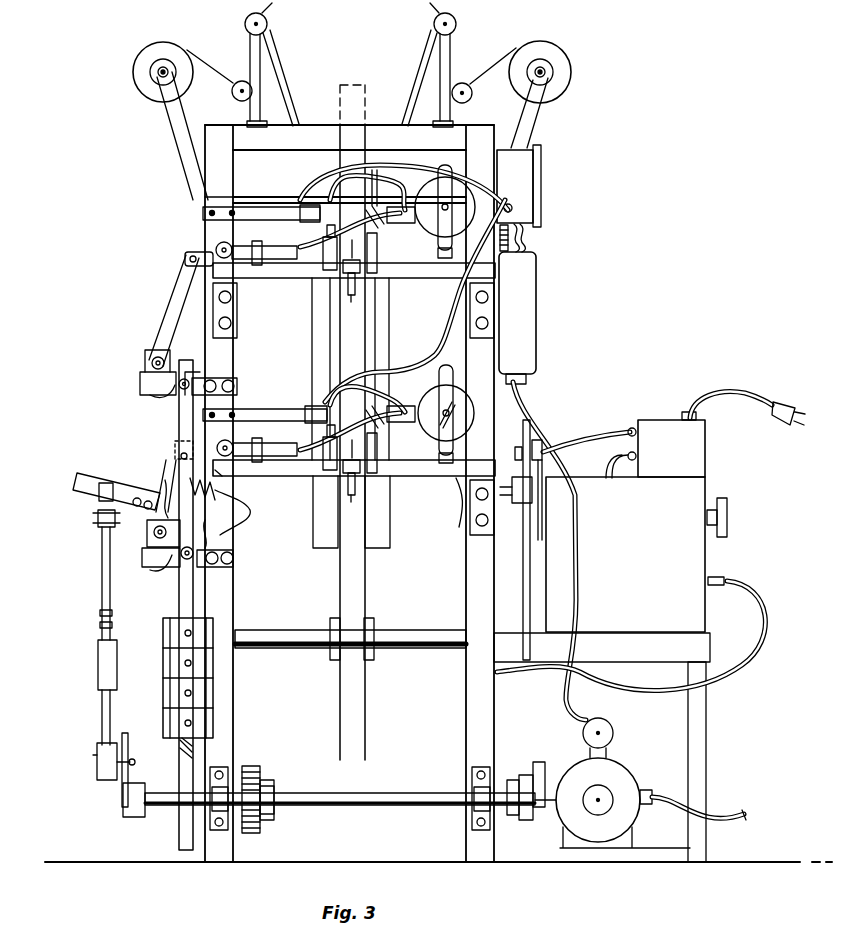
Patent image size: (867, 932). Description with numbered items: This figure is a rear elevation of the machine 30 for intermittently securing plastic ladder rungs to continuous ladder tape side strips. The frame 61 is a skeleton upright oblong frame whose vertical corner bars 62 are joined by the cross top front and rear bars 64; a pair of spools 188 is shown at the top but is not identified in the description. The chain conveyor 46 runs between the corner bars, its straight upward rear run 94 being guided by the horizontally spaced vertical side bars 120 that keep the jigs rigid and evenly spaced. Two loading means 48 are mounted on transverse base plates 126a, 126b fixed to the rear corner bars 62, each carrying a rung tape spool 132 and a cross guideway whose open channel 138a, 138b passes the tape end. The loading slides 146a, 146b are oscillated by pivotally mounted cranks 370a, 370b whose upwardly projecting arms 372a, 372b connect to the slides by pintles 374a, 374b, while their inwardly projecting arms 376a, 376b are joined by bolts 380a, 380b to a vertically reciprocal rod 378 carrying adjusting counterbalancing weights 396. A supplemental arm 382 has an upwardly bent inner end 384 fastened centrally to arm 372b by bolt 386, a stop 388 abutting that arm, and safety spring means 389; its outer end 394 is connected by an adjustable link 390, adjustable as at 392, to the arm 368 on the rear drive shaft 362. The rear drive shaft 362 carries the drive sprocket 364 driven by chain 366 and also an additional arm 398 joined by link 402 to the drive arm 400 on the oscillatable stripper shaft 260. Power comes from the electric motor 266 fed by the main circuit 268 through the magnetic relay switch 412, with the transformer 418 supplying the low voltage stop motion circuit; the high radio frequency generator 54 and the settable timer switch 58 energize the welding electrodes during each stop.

The supply spool 188 is at (158, 44).
The chain conveyor 46 is at (358, 116).
The open channel 138a is at (360, 175).
The frame 61 is at (205, 168).
The vertical corner bars 62 is at (473, 347).
The cross top front and rear bars 64 is at (313, 147).
The transformer 418 is at (528, 172).
The machine 30 is at (175, 205).
The slide 146a is at (202, 216).
The pintle 374a is at (190, 262).
The loading means 48 is at (300, 236).
The rung tape spool 132 is at (428, 226).
The upwardly projecting arm 372a is at (170, 300).
The transverse base plate 126a is at (284, 278).
The magnetic relay switch 412 is at (540, 305).
The bolt 380a is at (202, 372).
The vertical side bars 120 is at (388, 333).
The crank 370a is at (140, 384).
The inwardly projecting arm 376a is at (160, 395).
The slide 146b is at (198, 440).
The pintle 374b is at (180, 458).
The upwardly projecting arm 372b is at (176, 466).
The supplemental arm 382 is at (82, 476).
The open channel 138b is at (330, 374).
The drive arm 400 is at (527, 438).
The settable timer switch 58 is at (700, 450).
The outer end 394 is at (96, 500).
The bolt 386 is at (168, 480).
The safety spring means 389 is at (222, 474).
The stop 388 is at (147, 530).
The upwardly bent inner end 384 is at (236, 506).
The bolt 380b is at (206, 530).
The transverse base plate 126b is at (433, 492).
The oscillatable shaft 260 is at (441, 512).
The high radio frequency generator 54 is at (700, 562).
The crank 370b is at (142, 557).
The link 390 is at (100, 596).
The inwardly projecting arm 376b is at (165, 576).
The vertically reciprocal rod 378 is at (190, 592).
The upward rear run 94 is at (366, 582).
The link 402 is at (538, 546).
The adjusting means 392 is at (98, 652).
The counterbalancing weights 396 is at (214, 690).
The chain 366 is at (256, 772).
The drive sprocket 364 is at (262, 785).
The rear drive shaft 362 is at (395, 796).
The electric motor 266 is at (620, 760).
The main circuit 268 is at (744, 812).
The arm 368 is at (125, 780).
The additional arm 398 is at (528, 808).